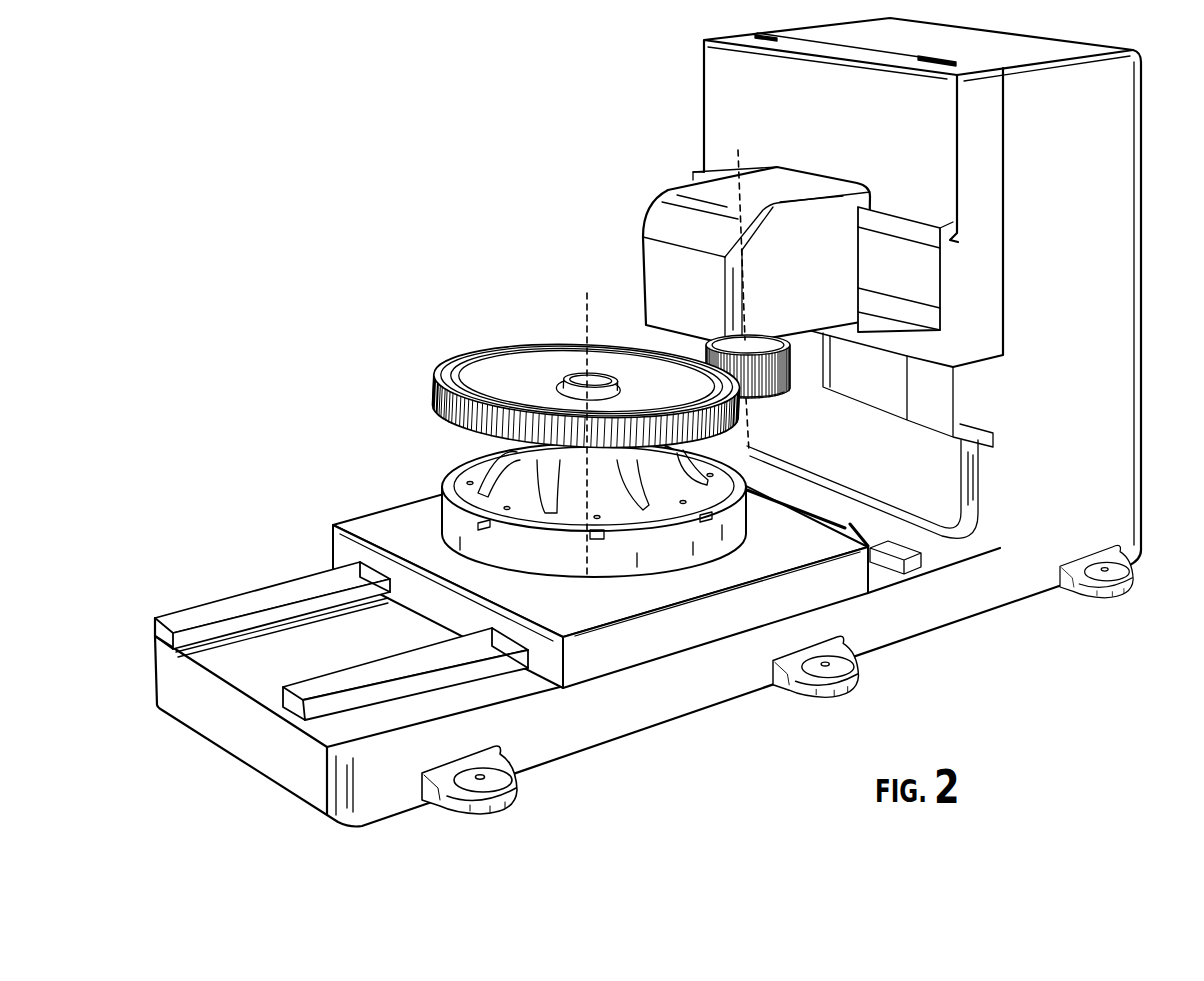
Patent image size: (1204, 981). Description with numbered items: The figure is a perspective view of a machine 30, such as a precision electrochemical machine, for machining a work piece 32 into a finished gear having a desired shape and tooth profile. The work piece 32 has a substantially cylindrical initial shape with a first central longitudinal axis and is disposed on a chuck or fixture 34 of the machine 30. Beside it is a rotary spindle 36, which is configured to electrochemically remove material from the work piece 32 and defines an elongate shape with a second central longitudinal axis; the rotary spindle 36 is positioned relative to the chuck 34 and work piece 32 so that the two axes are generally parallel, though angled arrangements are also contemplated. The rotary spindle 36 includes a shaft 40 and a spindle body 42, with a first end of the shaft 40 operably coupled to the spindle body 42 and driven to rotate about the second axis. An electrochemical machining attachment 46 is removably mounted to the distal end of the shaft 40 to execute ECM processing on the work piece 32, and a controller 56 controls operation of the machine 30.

The machine 30 is at (672, 422).
The work piece 32 is at (477, 393).
The chuck 34 is at (517, 467).
The rotary spindle 36 is at (762, 330).
The shaft 40 is at (819, 388).
The spindle body 42 is at (690, 190).
The electrochemical machining attachment 46 is at (787, 343).
The controller 56 is at (1100, 342).